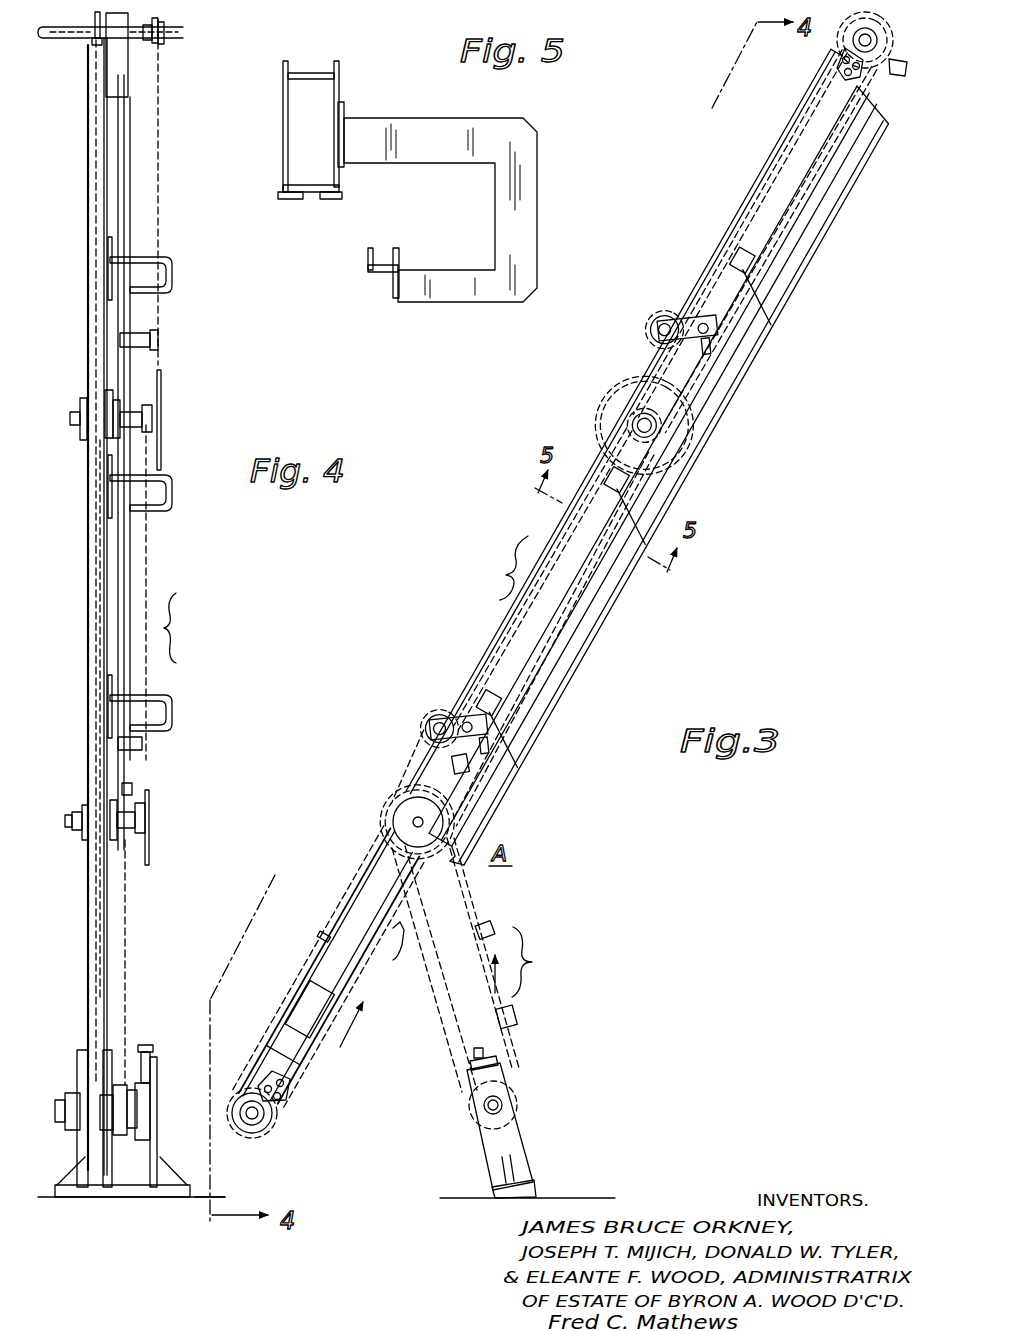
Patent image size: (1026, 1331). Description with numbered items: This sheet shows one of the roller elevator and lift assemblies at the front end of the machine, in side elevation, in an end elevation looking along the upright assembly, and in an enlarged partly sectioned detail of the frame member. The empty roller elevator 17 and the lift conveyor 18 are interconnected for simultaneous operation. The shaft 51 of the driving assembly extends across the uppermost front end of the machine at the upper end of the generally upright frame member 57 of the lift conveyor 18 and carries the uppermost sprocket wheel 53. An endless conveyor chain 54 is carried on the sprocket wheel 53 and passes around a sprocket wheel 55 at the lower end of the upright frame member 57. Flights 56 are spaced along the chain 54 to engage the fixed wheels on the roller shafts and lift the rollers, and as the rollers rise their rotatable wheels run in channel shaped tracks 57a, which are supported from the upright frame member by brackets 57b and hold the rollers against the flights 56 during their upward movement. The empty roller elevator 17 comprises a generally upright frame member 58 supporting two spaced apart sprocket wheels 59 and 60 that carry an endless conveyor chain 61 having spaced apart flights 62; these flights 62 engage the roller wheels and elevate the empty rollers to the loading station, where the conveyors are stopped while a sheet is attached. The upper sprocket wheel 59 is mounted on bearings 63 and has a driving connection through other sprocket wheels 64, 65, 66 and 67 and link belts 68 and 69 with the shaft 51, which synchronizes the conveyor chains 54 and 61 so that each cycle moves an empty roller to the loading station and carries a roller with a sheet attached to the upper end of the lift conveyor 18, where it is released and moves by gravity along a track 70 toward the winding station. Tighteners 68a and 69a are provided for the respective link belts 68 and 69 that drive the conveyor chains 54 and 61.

In FIG. 3, the empty roller elevator 17 is at (530, 962).
In FIG. 3, the lift conveyor 18 is at (494, 568).
In FIG. 4, the lift conveyor 18 is at (189, 628).
In FIG. 3, the shaft 51 is at (850, 38).
In FIG. 4, the shaft 51 is at (168, 46).
In FIG. 3, the sprocket wheel 53 is at (853, 32).
In FIG. 4, the sprocket wheel 53 is at (94, 12).
In FIG. 3, the endless conveyor chain 54 is at (243, 1070).
In FIG. 4, the endless conveyor chain 54 is at (98, 79).
In FIG. 3, the sprocket wheel 55 is at (268, 1134).
In FIG. 4, the sprocket wheel 55 is at (93, 1134).
In FIG. 3, the flights 56 is at (402, 954).
In FIG. 3, the upright frame member 57 is at (783, 183).
In FIG. 4, the upright frame member 57 is at (88, 622).
In FIG. 5, the upright frame member 57 is at (352, 92).
In FIG. 4, the channel shaped tracks 57a is at (168, 506).
In FIG. 5, the channel shaped tracks 57a is at (505, 205).
In FIG. 4, the brackets 57b is at (126, 173).
In FIG. 5, the brackets 57b is at (425, 236).
In FIG. 3, the upright frame member 58 is at (465, 998).
In FIG. 3, the sprocket wheel 59 is at (434, 969).
In FIG. 4, the sprocket wheel 59 is at (127, 789).
In FIG. 3, the sprocket wheel 60 is at (490, 1080).
In FIG. 3, the endless conveyor chain 61 is at (447, 1030).
In FIG. 4, the endless conveyor chain 61 is at (128, 953).
In FIG. 3, the flights 62 is at (492, 923).
In FIG. 3, the bearings 63 is at (412, 823).
In FIG. 4, the bearings 63 is at (70, 818).
In FIG. 3, the sprocket wheel 64 is at (388, 806).
In FIG. 4, the sprocket wheel 64 is at (150, 803).
In FIG. 3, the sprocket wheel 65 is at (670, 398).
In FIG. 4, the sprocket wheel 65 is at (160, 407).
In FIG. 3, the sprocket wheel 66 is at (618, 405).
In FIG. 4, the sprocket wheel 66 is at (162, 386).
In FIG. 3, the sprocket wheel 67 is at (877, 33).
In FIG. 4, the sprocket wheel 67 is at (172, 33).
In FIG. 3, the link belt 68 is at (418, 772).
In FIG. 4, the link belt 68 is at (148, 576).
In FIG. 3, the tightener 68a is at (424, 738).
In FIG. 4, the tightener 68a is at (144, 751).
In FIG. 3, the link belt 69 is at (653, 372).
In FIG. 4, the link belt 69 is at (160, 107).
In FIG. 3, the tightener 69a is at (648, 337).
In FIG. 4, the tightener 69a is at (160, 342).
In FIG. 3, the track 70 is at (893, 93).